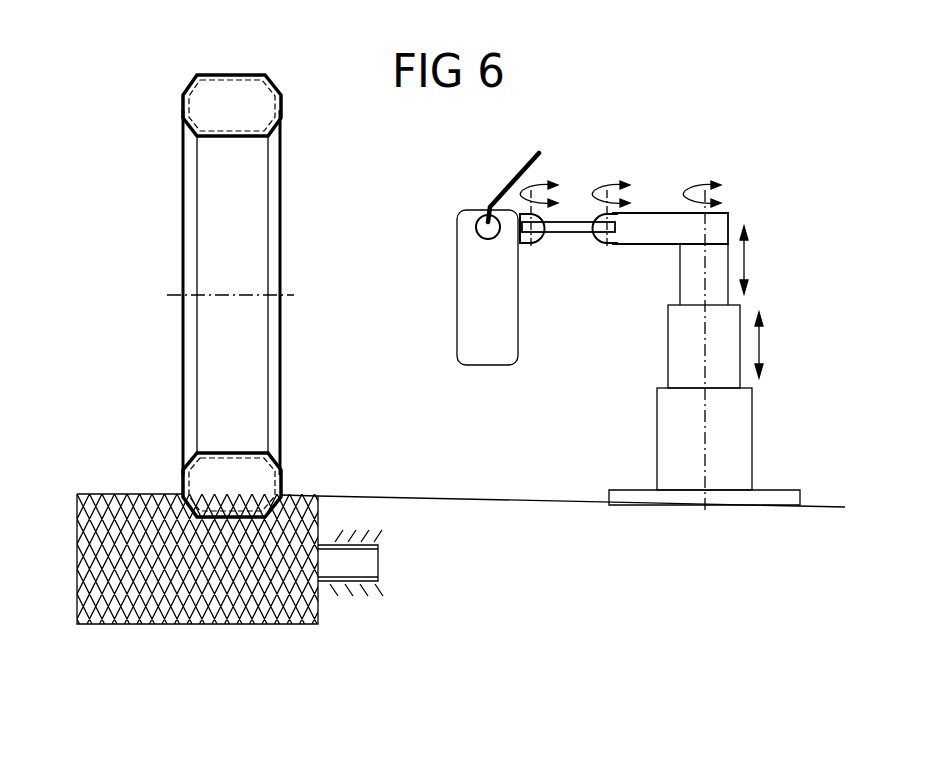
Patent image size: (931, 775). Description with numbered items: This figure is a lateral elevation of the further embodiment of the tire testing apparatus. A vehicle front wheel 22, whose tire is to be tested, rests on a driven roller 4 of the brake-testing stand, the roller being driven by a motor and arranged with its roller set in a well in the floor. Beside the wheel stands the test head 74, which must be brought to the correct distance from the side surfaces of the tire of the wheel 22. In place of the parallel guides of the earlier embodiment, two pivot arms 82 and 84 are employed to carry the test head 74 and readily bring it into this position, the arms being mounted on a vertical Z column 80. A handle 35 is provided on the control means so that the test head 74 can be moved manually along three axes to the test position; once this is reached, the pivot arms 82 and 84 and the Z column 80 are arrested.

The roller 4 is at (105, 494).
The front wheel 22 is at (270, 105).
The handle 35 is at (515, 170).
The test head 74 is at (478, 352).
The Z column 80 is at (690, 270).
The pivot arm 82 is at (568, 233).
The pivot arm 84 is at (650, 225).